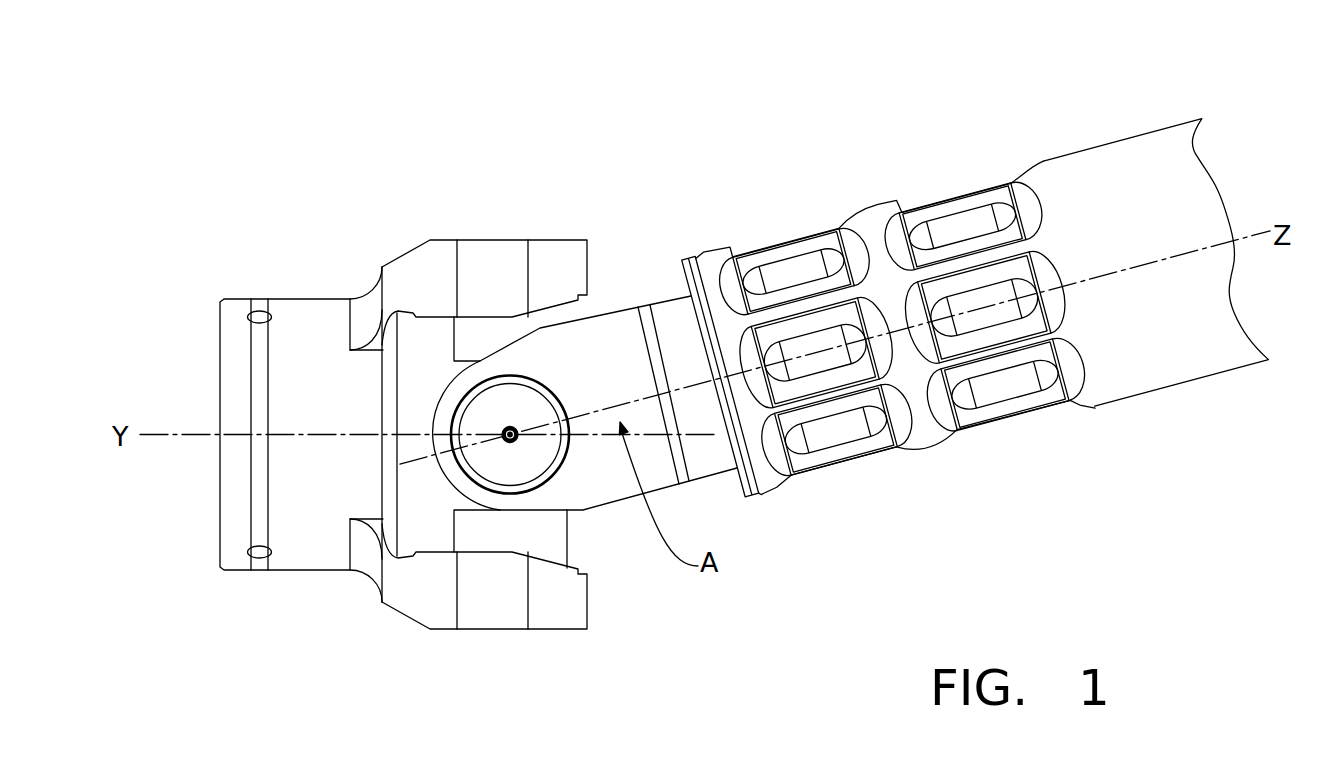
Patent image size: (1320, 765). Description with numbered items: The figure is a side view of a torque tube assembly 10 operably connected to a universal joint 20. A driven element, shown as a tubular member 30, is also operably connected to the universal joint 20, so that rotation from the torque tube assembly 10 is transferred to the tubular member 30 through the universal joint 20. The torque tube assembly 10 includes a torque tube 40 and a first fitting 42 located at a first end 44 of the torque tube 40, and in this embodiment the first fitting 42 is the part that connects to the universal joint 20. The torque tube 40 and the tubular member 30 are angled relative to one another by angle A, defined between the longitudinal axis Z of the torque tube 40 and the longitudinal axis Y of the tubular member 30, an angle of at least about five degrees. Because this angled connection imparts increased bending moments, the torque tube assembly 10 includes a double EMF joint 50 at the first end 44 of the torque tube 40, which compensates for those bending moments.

The torque tube assembly 10 is at (597, 80).
The universal joint 20 is at (402, 233).
The tubular member 30 is at (305, 305).
The torque tube 40 is at (1117, 158).
The first fitting 42 is at (688, 260).
The first end 44 is at (755, 527).
The double EMF joint 50 is at (915, 180).